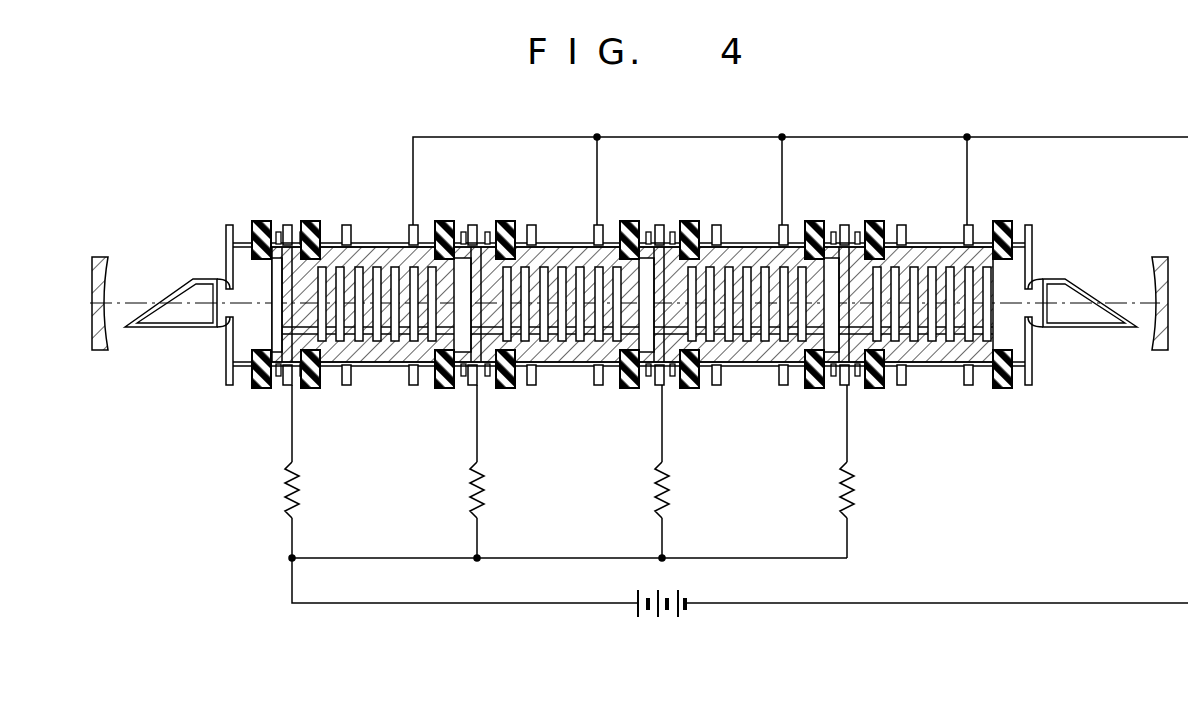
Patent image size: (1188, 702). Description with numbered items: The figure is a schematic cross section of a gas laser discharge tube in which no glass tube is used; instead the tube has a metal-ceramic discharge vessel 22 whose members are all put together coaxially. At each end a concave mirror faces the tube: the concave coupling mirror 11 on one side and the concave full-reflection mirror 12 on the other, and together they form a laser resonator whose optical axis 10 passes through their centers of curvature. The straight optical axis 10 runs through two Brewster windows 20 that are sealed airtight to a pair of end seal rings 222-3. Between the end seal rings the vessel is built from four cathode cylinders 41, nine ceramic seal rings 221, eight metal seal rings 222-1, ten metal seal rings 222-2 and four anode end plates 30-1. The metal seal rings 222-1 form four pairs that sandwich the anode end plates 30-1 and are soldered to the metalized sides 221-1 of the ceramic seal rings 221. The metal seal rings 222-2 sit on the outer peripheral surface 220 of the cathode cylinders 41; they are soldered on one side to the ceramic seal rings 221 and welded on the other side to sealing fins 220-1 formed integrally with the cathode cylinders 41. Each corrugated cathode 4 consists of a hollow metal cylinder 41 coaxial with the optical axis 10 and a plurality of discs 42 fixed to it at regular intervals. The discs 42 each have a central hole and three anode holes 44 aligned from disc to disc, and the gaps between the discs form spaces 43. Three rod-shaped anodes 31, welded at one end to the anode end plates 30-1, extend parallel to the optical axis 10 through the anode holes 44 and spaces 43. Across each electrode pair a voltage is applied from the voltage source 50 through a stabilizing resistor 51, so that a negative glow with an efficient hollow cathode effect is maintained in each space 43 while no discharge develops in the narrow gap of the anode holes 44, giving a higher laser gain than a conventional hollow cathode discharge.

The corrugated cathode 4 is at (403, 384).
The optical axis 10 is at (122, 302).
The concave coupling mirror 11 is at (100, 256).
The concave full-reflection mirror 12 is at (1158, 256).
The Brewster windows 20 is at (164, 300).
The metal-ceramic discharge vessel 22 is at (1005, 390).
The anode end plates 30-1 is at (325, 398).
The rod-shaped anodes 31 is at (745, 353).
The cathode cylinders 41 is at (576, 367).
The discs 42 is at (672, 247).
The spaces 43 is at (583, 266).
The anode holes 44 is at (770, 326).
The voltage source 50 is at (664, 617).
The stabilizing resistor 51 is at (670, 490).
The outer peripheral surface 220 is at (356, 367).
The sealing fins 220-1 is at (412, 224).
The ceramic seal rings 221 is at (505, 221).
The metalized sides 221-1 is at (875, 221).
The metal seal rings 222-1 is at (310, 221).
The metal seal rings 222-2 is at (312, 388).
The end seal rings 222-3 is at (225, 357).